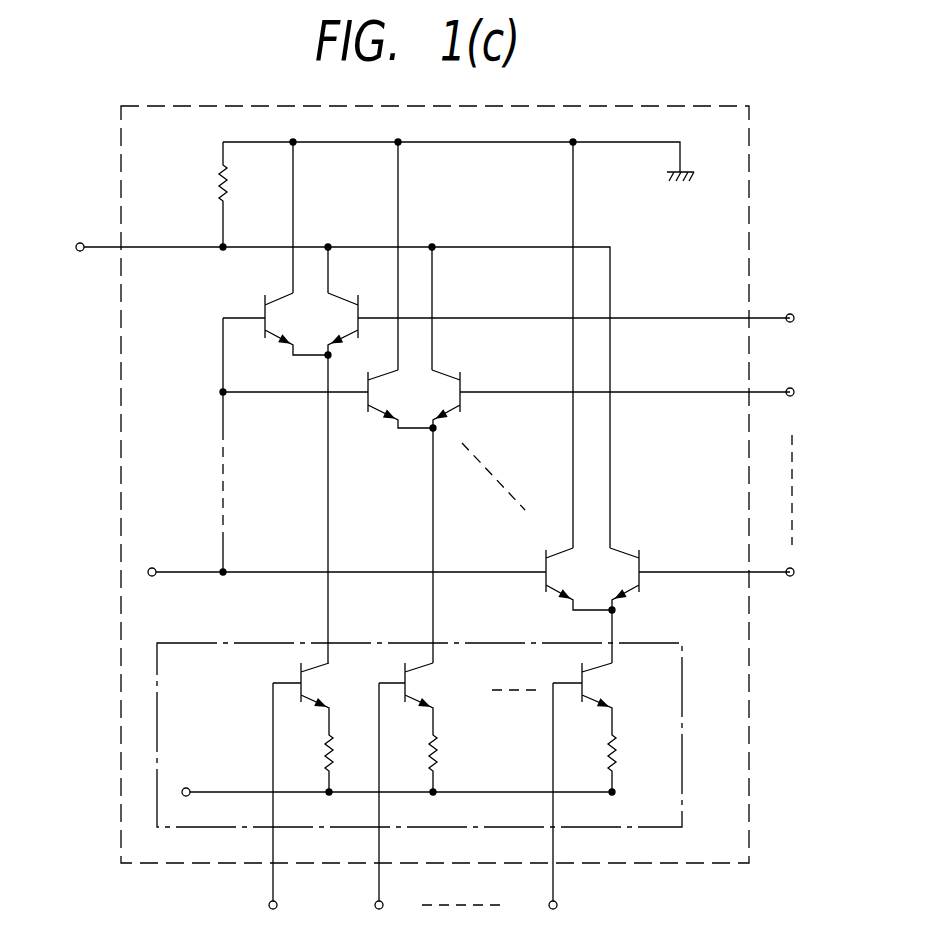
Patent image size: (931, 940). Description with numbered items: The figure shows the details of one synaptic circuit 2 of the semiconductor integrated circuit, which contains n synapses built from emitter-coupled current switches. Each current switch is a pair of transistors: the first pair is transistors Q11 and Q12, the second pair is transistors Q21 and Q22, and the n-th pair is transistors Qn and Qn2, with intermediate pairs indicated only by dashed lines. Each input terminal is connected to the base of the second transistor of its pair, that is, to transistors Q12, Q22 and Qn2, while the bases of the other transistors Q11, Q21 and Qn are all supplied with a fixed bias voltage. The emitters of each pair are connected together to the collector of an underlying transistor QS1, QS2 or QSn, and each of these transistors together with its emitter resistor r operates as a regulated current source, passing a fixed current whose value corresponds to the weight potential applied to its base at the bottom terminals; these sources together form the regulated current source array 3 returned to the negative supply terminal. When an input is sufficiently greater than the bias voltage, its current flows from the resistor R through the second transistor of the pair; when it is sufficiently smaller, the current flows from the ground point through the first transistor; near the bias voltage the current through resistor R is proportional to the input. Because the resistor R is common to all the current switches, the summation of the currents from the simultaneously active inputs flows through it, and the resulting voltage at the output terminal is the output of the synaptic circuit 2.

The synaptic circuit 2 is at (120, 436).
The regulated current source array 3 is at (655, 634).
The resistor R is at (233, 194).
The transistor Q11 is at (275, 310).
The transistor Q12 is at (559, 310).
The transistor Q21 is at (328, 385).
The transistor Q22 is at (611, 385).
The transistor Qn is at (384, 565).
The transistor Qn2 is at (700, 565).
The transistor QS1 is at (310, 727).
The transistor QS2 is at (415, 727).
The transistor QSn is at (591, 727).